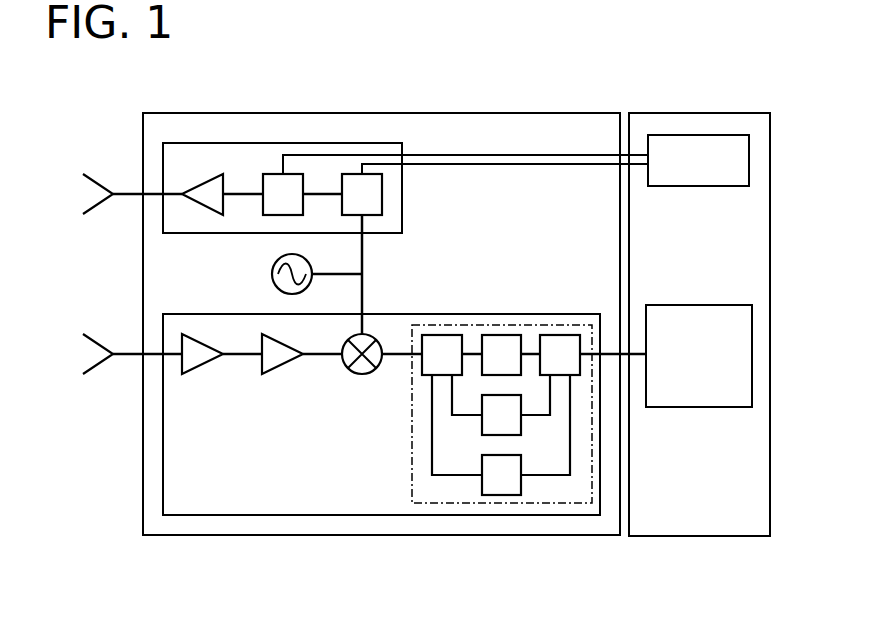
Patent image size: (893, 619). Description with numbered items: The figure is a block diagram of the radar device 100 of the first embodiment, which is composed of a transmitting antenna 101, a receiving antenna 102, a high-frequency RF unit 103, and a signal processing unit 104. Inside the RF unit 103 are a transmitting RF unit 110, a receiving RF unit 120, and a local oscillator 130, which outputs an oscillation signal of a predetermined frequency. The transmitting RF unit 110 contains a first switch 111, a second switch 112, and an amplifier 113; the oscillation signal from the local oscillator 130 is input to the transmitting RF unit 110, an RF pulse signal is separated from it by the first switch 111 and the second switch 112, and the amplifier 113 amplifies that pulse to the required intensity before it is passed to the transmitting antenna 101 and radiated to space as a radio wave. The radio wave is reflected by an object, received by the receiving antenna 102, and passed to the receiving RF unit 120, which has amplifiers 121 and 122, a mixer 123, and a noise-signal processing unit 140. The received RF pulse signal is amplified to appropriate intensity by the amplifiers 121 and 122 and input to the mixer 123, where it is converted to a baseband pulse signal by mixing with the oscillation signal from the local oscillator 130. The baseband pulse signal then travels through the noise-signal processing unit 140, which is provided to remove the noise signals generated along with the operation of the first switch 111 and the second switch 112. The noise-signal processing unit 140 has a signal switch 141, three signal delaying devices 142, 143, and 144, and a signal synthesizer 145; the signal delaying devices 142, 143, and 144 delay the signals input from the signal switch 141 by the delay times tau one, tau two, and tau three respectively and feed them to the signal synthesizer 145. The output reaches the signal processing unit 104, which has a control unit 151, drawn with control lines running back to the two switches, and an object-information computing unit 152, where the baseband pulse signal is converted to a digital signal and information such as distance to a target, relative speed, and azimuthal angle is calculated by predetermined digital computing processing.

The radar device 100 is at (330, 81).
The transmitting antenna 101 is at (98, 181).
The receiving antenna 102 is at (98, 342).
The RF unit 103 is at (263, 112).
The signal processing unit 104 is at (706, 113).
The transmitting RF unit 110 is at (367, 143).
The first switch 111 is at (382, 196).
The second switch 112 is at (257, 216).
The amplifier 113 is at (202, 210).
The receiving RF unit 120 is at (258, 516).
The amplifier 121 is at (208, 366).
The amplifier 122 is at (288, 366).
The mixer 123 is at (365, 376).
The local oscillator 130 is at (274, 281).
The noise-signal processing unit 140 is at (412, 456).
The signal switch 141 is at (445, 335).
The signal delaying device 142 is at (502, 335).
The signal delaying device 143 is at (481, 436).
The signal delaying device 144 is at (520, 487).
The signal synthesizer 145 is at (562, 335).
The control unit 151 is at (749, 165).
The object-information computing unit 152 is at (752, 370).